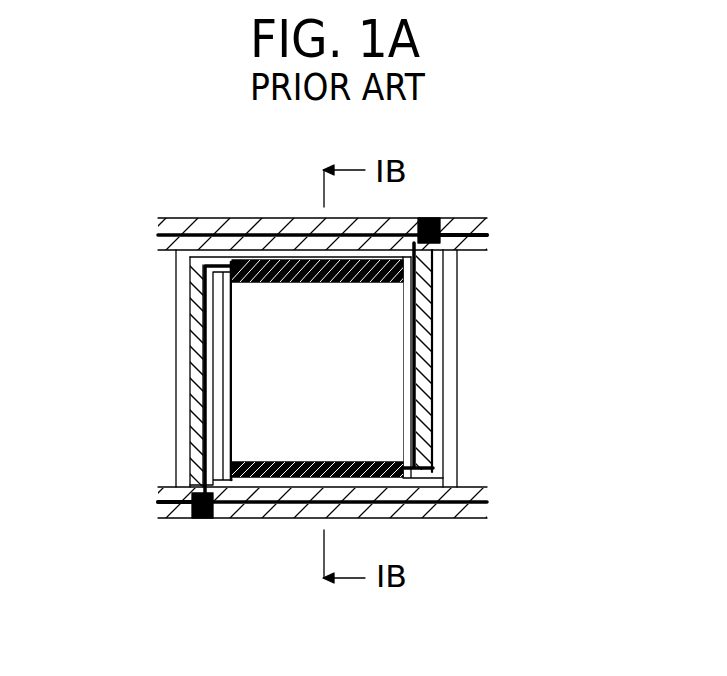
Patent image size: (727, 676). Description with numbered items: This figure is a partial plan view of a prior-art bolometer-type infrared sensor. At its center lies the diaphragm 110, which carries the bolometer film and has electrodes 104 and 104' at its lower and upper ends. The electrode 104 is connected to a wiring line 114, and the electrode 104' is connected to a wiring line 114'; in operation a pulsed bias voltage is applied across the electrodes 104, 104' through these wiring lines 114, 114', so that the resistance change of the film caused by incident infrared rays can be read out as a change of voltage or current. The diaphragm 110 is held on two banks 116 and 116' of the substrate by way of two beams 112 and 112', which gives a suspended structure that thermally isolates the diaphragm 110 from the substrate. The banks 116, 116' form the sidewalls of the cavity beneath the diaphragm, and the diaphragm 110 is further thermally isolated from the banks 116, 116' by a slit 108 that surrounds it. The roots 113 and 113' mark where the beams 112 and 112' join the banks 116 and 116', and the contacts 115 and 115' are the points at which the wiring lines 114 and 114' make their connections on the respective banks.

The electrode 104 is at (322, 521).
The electrode 104' is at (325, 217).
The slit 108 is at (412, 292).
The diaphragm 110 is at (266, 348).
The beam 112 is at (491, 367).
The beam 112' is at (133, 373).
The root of beam 113 is at (363, 506).
The root of beam 113' is at (319, 207).
The wiring line 114 is at (536, 334).
The wiring line 114' is at (106, 391).
The contact 115 is at (491, 196).
The contact 115' is at (172, 541).
The bank 116 is at (449, 291).
The bank 116' is at (198, 448).